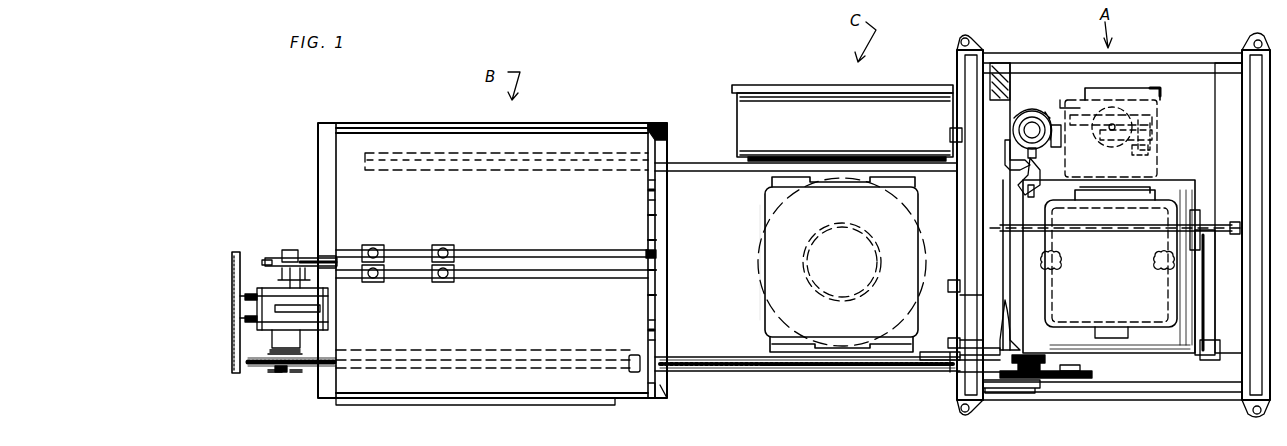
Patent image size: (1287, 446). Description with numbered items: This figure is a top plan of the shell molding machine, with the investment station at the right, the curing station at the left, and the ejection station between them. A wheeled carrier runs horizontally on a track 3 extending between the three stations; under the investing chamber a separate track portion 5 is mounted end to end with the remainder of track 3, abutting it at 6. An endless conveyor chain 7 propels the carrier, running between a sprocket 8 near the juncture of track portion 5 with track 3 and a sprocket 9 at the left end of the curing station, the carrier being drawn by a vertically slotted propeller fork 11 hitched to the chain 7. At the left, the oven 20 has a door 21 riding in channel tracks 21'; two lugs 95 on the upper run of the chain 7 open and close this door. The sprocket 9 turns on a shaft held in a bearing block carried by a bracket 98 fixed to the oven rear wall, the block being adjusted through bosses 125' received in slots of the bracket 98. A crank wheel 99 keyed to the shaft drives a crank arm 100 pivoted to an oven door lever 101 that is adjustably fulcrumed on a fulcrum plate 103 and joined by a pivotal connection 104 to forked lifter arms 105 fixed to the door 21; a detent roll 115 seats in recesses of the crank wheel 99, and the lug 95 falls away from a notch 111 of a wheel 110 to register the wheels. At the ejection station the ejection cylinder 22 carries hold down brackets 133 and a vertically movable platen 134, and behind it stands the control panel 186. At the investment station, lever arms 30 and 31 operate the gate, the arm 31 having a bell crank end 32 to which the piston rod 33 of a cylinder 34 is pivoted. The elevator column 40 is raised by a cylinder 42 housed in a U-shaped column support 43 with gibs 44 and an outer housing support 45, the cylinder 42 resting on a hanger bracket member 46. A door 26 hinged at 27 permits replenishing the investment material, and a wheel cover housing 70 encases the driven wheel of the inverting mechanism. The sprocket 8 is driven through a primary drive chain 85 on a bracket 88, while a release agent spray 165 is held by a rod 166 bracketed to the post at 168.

The track 3 is at (710, 160).
The track portion 5 is at (1220, 344).
The abutting relation 6 is at (1010, 148).
The endless conveyor chain 7 is at (712, 364).
The sprocket 8 is at (1040, 355).
The sprocket 9 is at (262, 360).
The propeller fork 11 is at (945, 372).
The oven 20 is at (584, 132).
The door 21 is at (677, 258).
The channel tracks 21' is at (671, 253).
The ejection cylinder 22 is at (812, 292).
The door 26 is at (1122, 298).
The hinge 27 is at (1124, 207).
The lever arm 30 is at (1206, 300).
The lever arm 31 is at (1008, 286).
The bell crank end 32 is at (1020, 192).
The piston rod 33 is at (1038, 190).
The cylinder 34 is at (1042, 102).
The channel column 40 is at (1152, 134).
The cylinder 42 is at (1115, 105).
The U-shaped column support 43 is at (1111, 138).
The gibs 44 is at (1150, 150).
The outer housing support 45 is at (1150, 122).
The hanger bracket member 46 is at (1085, 112).
The wheel cover housing 70 is at (1230, 190).
The primary drive chain 85 is at (1055, 380).
The bracket 88 is at (1010, 393).
The lugs 95 is at (633, 373).
The bracket 98 is at (330, 312).
The crank wheel 99 is at (286, 250).
The crank arm 100 is at (302, 256).
The oven door lever 101 is at (574, 262).
The fulcrum plate 103 is at (416, 250).
The pivotal connection 104 is at (658, 254).
The forked lifter arms 105 is at (660, 227).
The wheel 110 is at (270, 353).
The notch 111 is at (285, 375).
The detent roll 115 is at (262, 266).
The bosses 125' is at (330, 320).
The hold down brackets 133 is at (806, 180).
The platen 134 is at (768, 323).
The spray 165 is at (960, 303).
The rod 166 is at (960, 324).
The bracket 168 is at (950, 135).
The control panel 186 is at (845, 131).